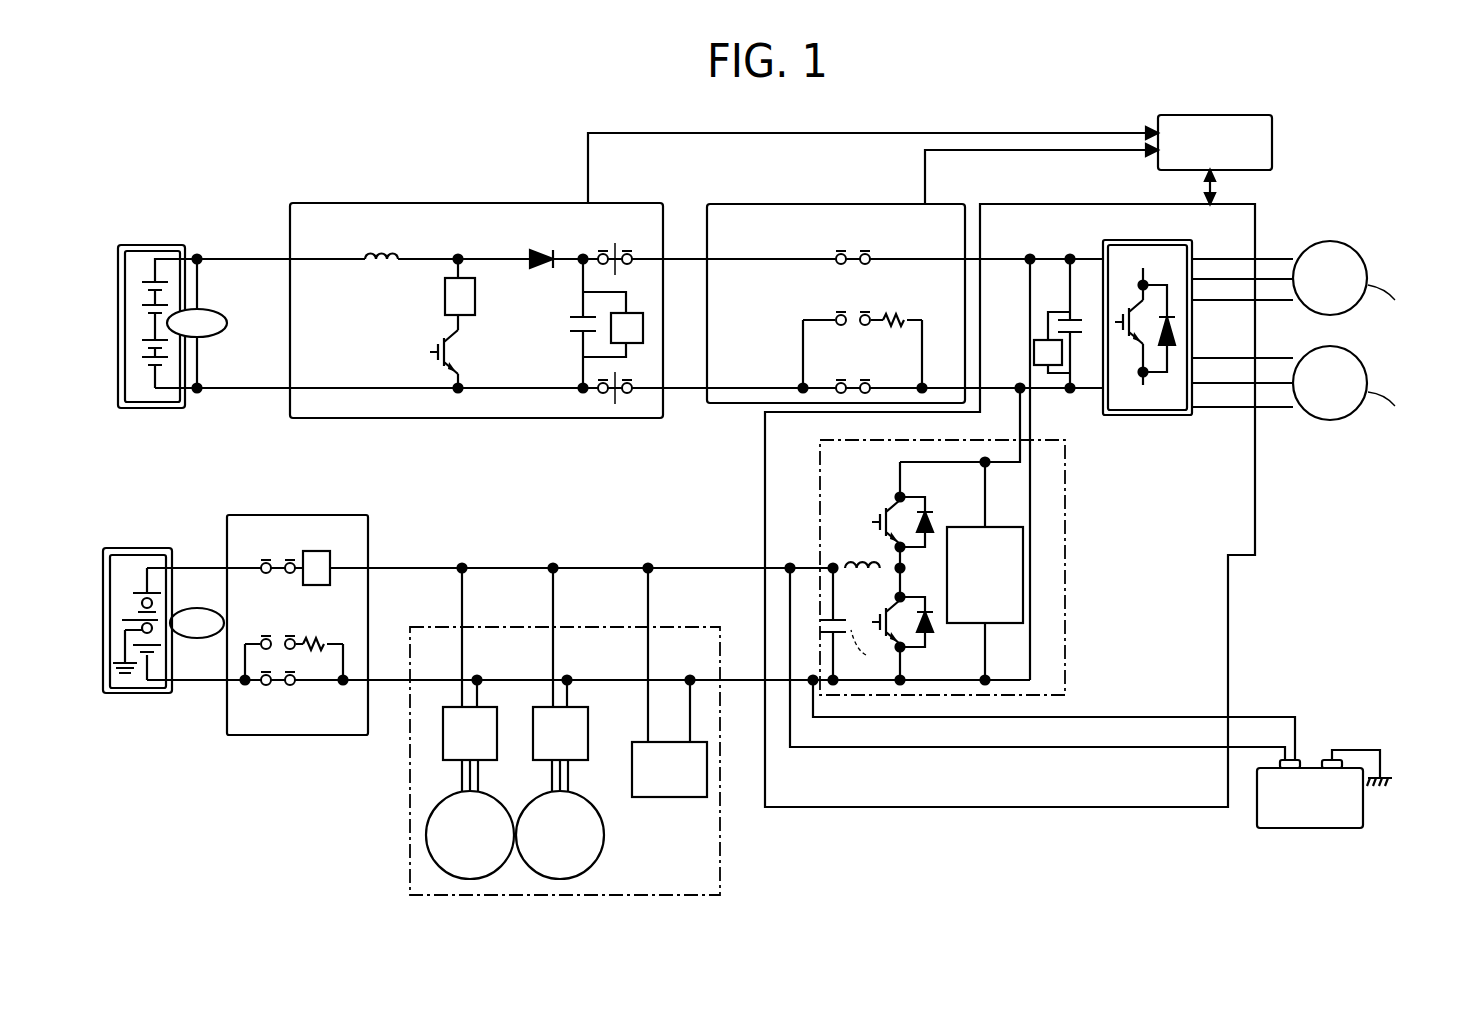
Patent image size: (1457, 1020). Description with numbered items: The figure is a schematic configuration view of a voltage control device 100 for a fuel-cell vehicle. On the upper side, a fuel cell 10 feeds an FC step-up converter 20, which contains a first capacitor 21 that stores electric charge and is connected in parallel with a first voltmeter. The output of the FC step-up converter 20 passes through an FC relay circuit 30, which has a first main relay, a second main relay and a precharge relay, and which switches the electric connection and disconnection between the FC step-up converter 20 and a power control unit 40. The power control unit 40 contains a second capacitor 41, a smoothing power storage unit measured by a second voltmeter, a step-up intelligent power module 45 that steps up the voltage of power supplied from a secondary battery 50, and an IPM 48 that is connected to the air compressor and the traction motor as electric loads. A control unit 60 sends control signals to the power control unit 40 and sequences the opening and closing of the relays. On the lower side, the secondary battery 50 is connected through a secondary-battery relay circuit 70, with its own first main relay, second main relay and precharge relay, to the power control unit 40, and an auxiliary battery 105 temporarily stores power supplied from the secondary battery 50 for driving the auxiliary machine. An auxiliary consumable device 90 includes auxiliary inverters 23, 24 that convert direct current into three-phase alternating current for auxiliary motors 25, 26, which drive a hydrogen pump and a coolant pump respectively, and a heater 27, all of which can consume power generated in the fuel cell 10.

The voltage control device 100 is at (216, 141).
The fuel cell 10 is at (152, 245).
The FC step-up converter 20 is at (430, 203).
The first capacitor 21 is at (566, 318).
The FC relay circuit 30 is at (814, 204).
The power control unit 40 is at (1074, 204).
The second capacitor 41 is at (1062, 318).
The step-up intelligent power module 45 is at (1068, 540).
The IPM 48 is at (1160, 241).
The secondary battery 50 is at (145, 548).
The control unit 60 is at (1275, 140).
The secondary-battery relay circuit 70 is at (300, 514).
The auxiliary consumable device 90 is at (655, 900).
The auxiliary inverter 23 is at (440, 738).
The auxiliary inverter 24 is at (590, 735).
The auxiliary motor 25 is at (428, 828).
The auxiliary motor 26 is at (605, 832).
The heater 27 is at (670, 799).
The auxiliary battery 105 is at (1310, 830).